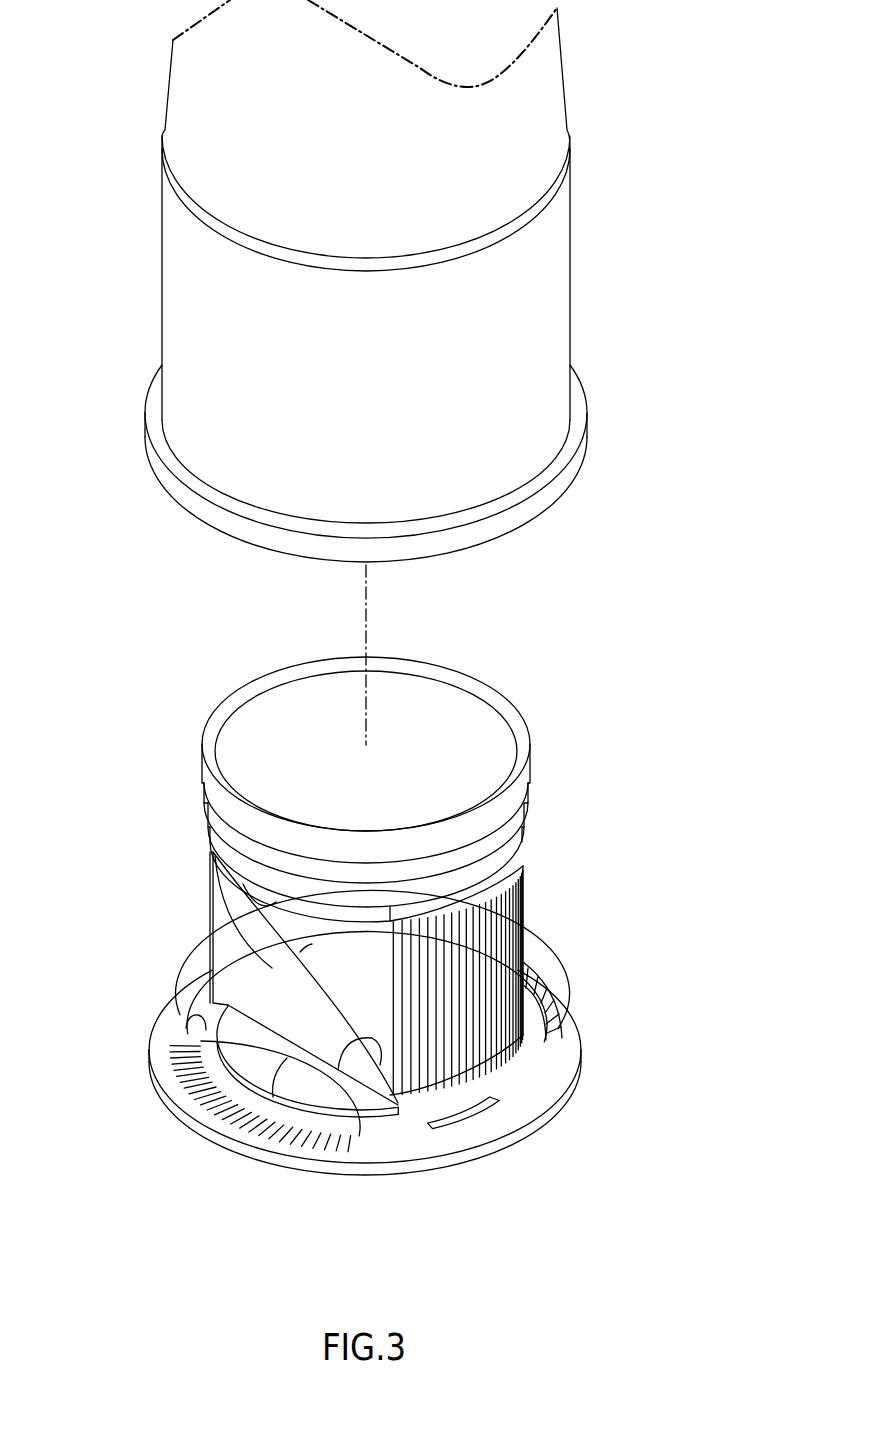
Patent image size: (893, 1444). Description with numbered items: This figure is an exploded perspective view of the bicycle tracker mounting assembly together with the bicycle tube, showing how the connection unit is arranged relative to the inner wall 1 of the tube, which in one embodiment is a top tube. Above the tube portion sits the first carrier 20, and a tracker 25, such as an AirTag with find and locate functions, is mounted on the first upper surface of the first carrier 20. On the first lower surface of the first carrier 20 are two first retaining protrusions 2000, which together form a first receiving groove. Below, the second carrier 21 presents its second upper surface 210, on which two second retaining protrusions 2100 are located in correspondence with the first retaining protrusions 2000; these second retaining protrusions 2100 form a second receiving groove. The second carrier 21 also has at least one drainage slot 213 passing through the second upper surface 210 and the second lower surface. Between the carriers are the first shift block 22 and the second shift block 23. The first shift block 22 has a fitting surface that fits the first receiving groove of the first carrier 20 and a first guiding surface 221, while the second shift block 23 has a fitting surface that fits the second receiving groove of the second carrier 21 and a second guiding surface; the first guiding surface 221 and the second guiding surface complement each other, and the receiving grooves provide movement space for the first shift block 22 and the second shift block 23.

The inner wall 1 is at (550, 300).
The first carrier 20 is at (422, 763).
The tracker 25 is at (460, 717).
The first retaining protrusions 2000 is at (284, 897).
The first shift block 22 is at (302, 952).
The second shift block 23 is at (248, 963).
The first guiding surface 221 is at (322, 1047).
The second carrier 21 is at (424, 1077).
The second upper surface 210 is at (518, 1072).
The drainage slot 213 is at (450, 1123).
The second retaining protrusions 2100 is at (317, 1140).